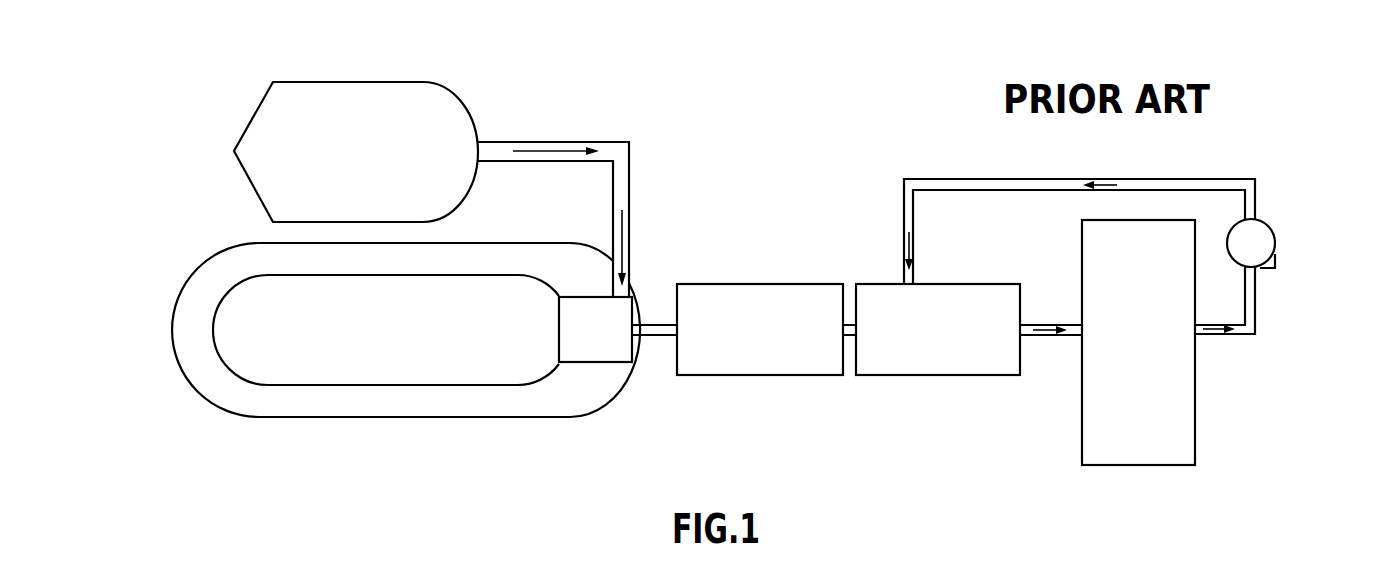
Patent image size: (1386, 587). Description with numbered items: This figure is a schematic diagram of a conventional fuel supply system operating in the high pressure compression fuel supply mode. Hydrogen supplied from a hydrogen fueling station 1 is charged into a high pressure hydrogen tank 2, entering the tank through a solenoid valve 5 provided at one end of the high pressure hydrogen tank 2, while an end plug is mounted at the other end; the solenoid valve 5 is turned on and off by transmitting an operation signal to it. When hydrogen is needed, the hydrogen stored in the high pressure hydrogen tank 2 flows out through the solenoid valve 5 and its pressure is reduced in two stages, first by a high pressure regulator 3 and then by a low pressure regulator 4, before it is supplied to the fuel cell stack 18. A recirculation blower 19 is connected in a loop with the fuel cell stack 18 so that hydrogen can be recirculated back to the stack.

The hydrogen fueling station 1 is at (255, 113).
The high pressure hydrogen tank 2 is at (337, 416).
The high pressure regulator 3 is at (737, 284).
The low pressure regulator 4 is at (922, 375).
The solenoid valve 5 is at (587, 363).
The fuel cell stack 18 is at (1082, 408).
The recirculation blower 19 is at (1262, 216).